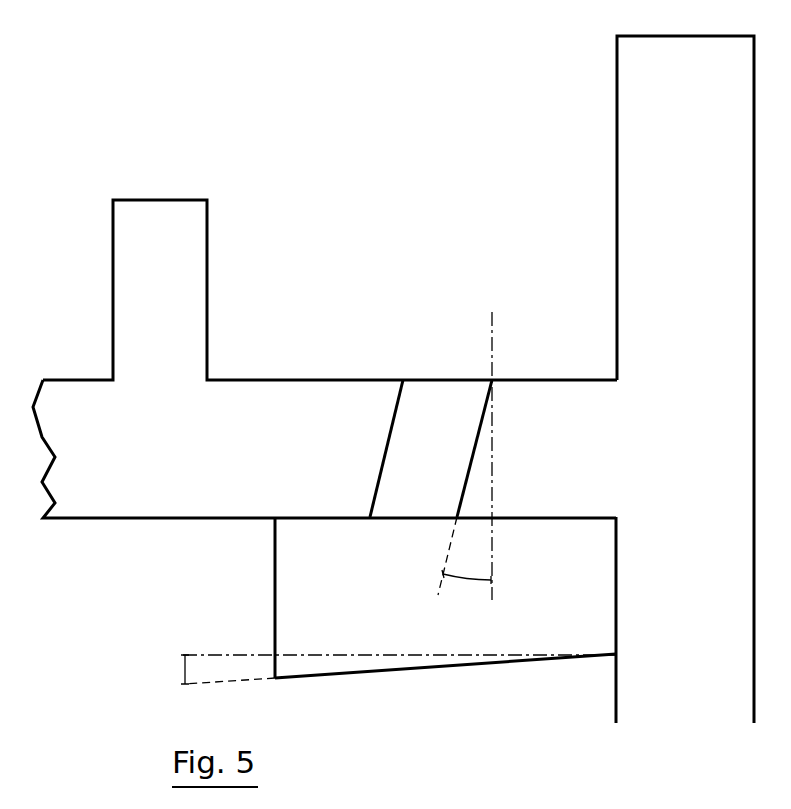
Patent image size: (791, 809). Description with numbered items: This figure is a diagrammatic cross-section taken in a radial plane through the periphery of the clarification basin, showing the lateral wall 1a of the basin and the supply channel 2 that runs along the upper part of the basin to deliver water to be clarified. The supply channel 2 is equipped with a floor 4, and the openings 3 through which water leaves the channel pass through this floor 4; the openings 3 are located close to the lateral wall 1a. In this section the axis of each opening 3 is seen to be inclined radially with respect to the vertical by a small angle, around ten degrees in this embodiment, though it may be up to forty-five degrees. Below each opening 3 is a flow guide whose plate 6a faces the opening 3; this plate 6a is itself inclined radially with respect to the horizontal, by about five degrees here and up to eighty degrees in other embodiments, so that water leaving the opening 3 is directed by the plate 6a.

The lateral wall 1a is at (649, 134).
The supply channel 2 is at (333, 222).
The openings 3 is at (455, 398).
The floor 4 is at (243, 395).
The plate 6a is at (360, 673).